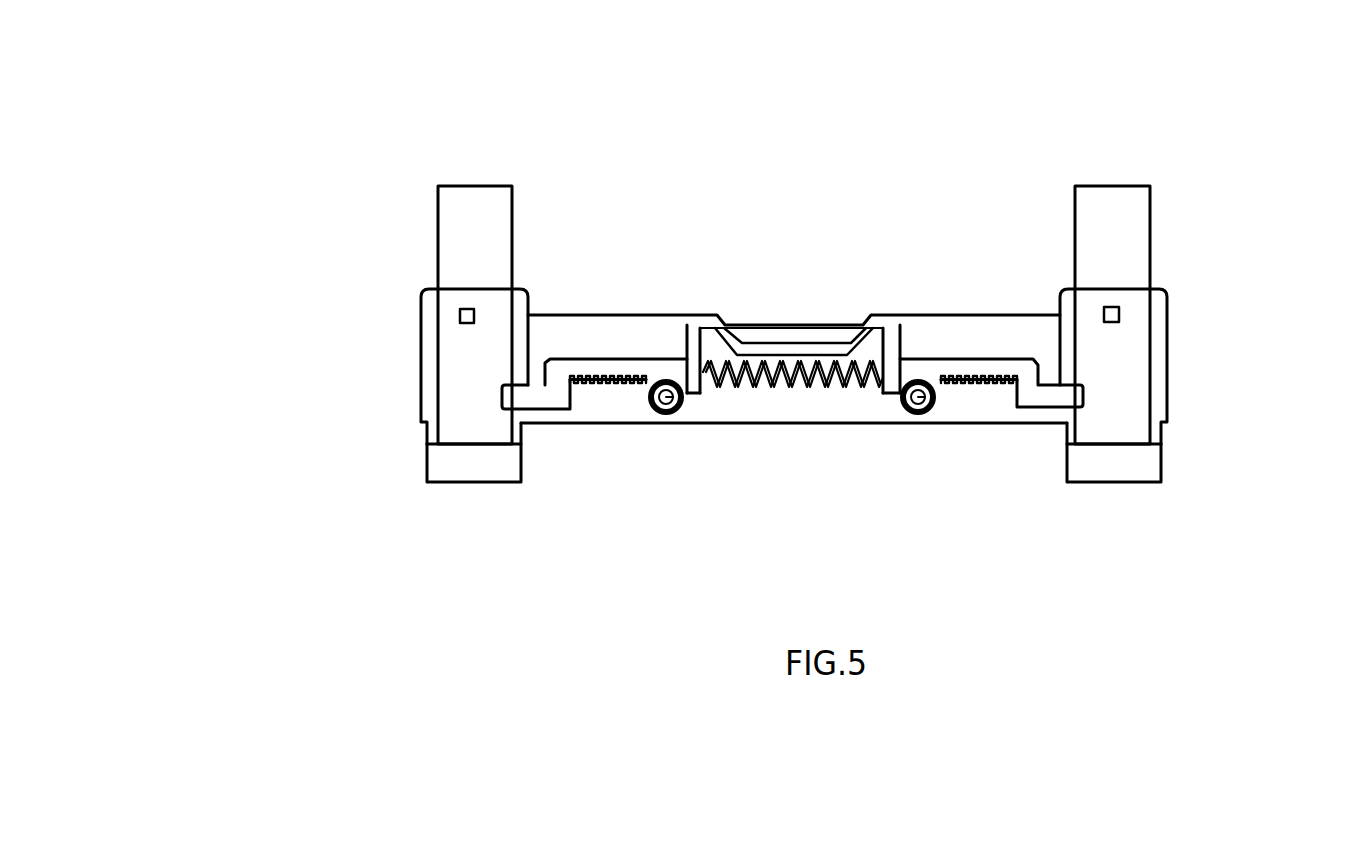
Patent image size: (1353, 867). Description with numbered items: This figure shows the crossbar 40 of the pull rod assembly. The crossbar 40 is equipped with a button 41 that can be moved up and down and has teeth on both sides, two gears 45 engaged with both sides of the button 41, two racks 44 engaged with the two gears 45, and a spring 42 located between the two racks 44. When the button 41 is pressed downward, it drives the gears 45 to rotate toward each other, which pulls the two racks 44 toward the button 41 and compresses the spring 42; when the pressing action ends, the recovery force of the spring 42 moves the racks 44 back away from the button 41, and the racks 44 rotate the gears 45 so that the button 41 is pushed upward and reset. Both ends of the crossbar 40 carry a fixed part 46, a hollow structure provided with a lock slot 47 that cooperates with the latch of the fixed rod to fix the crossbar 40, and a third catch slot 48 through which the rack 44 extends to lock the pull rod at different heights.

The crossbar 40 is at (452, 133).
The button 41 is at (785, 335).
The spring 42 is at (770, 378).
The racks 44 is at (593, 365).
The gears 45 is at (678, 402).
The fixed part 46 is at (1157, 320).
The lock slot 47 is at (467, 309).
The third catch slot 48 is at (1083, 405).